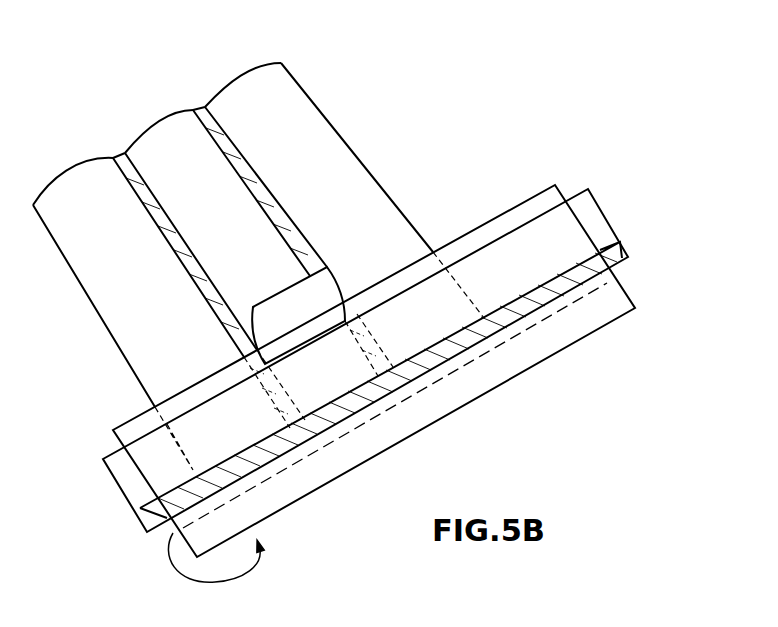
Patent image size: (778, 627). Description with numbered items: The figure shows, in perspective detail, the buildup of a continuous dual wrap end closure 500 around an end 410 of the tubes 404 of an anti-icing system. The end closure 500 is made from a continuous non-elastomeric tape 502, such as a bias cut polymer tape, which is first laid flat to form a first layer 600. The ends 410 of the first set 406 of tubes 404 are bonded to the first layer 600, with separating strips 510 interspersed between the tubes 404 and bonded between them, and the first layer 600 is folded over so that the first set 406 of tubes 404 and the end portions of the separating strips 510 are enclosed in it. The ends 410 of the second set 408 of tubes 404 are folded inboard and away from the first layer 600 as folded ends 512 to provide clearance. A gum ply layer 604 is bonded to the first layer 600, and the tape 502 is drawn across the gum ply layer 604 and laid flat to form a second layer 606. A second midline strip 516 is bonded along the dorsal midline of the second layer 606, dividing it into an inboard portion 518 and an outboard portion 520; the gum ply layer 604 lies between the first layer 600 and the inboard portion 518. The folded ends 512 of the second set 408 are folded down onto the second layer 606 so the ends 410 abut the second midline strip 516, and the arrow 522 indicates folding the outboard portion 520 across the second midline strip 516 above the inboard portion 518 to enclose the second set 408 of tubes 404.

The tubes 404 is at (82, 93).
The first set of tubes 406 is at (63, 177).
The second set of tubes 408 is at (173, 110).
The first end 410 is at (85, 408).
The continuous dual wrap end closure 500 is at (416, 137).
The continuous non-elastomeric tape 502 is at (634, 315).
The separating strips 510 is at (165, 222).
The folded end 512 is at (280, 295).
The second midline strip 516 is at (553, 281).
The inboard portion 518 is at (477, 265).
The outboard portion 520 is at (472, 383).
The arrow 522 is at (190, 576).
The first layer 600 is at (118, 524).
The gum ply layer 604 is at (520, 210).
The second layer 606 is at (424, 425).